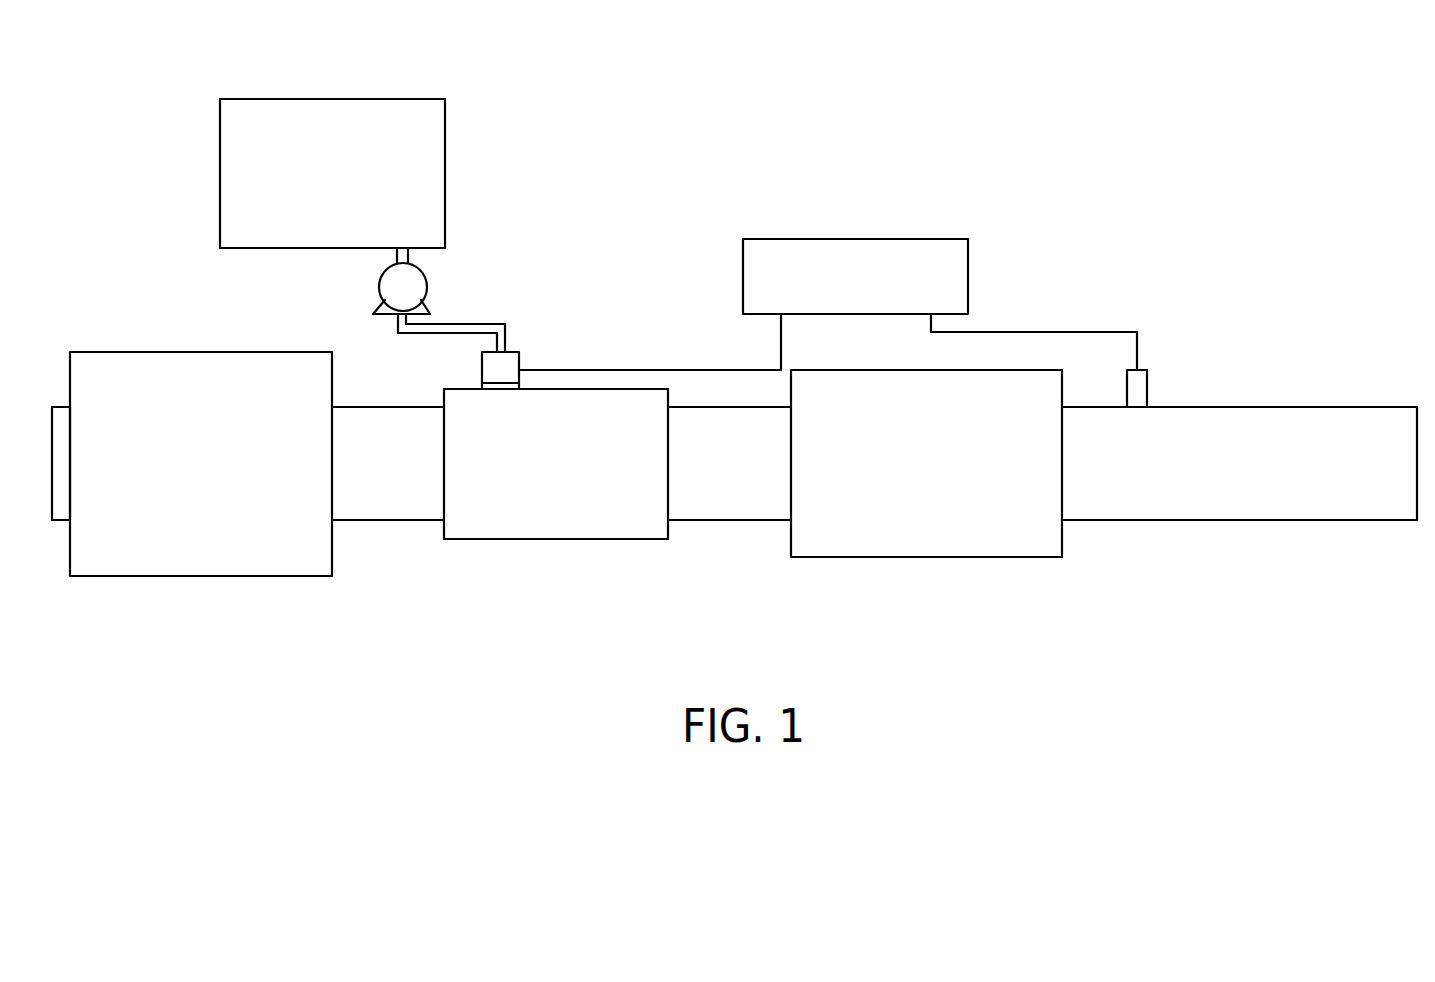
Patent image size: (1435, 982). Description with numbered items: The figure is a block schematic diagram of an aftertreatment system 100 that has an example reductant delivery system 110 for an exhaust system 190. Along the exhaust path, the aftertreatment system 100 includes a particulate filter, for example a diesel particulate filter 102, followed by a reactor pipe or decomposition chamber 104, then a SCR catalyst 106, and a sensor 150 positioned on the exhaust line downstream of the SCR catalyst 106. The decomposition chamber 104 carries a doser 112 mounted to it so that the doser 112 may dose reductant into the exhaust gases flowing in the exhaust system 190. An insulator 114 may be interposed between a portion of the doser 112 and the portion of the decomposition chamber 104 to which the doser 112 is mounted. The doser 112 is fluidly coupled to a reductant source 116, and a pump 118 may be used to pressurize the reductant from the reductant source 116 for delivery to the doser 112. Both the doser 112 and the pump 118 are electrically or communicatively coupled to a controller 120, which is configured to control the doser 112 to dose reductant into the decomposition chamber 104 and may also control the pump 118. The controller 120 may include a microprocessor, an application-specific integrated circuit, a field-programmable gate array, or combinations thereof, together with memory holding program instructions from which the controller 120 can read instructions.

The aftertreatment system 100 is at (1012, 307).
The diesel particulate filter 102 is at (233, 577).
The decomposition chamber 104 is at (657, 389).
The SCR catalyst 106 is at (933, 557).
The reductant delivery system 110 is at (620, 290).
The doser 112 is at (520, 361).
The insulator 114 is at (482, 380).
The reductant source 116 is at (397, 99).
The pump 118 is at (379, 289).
The controller 120 is at (838, 239).
The sensor 150 is at (1168, 381).
The exhaust system 190 is at (431, 622).